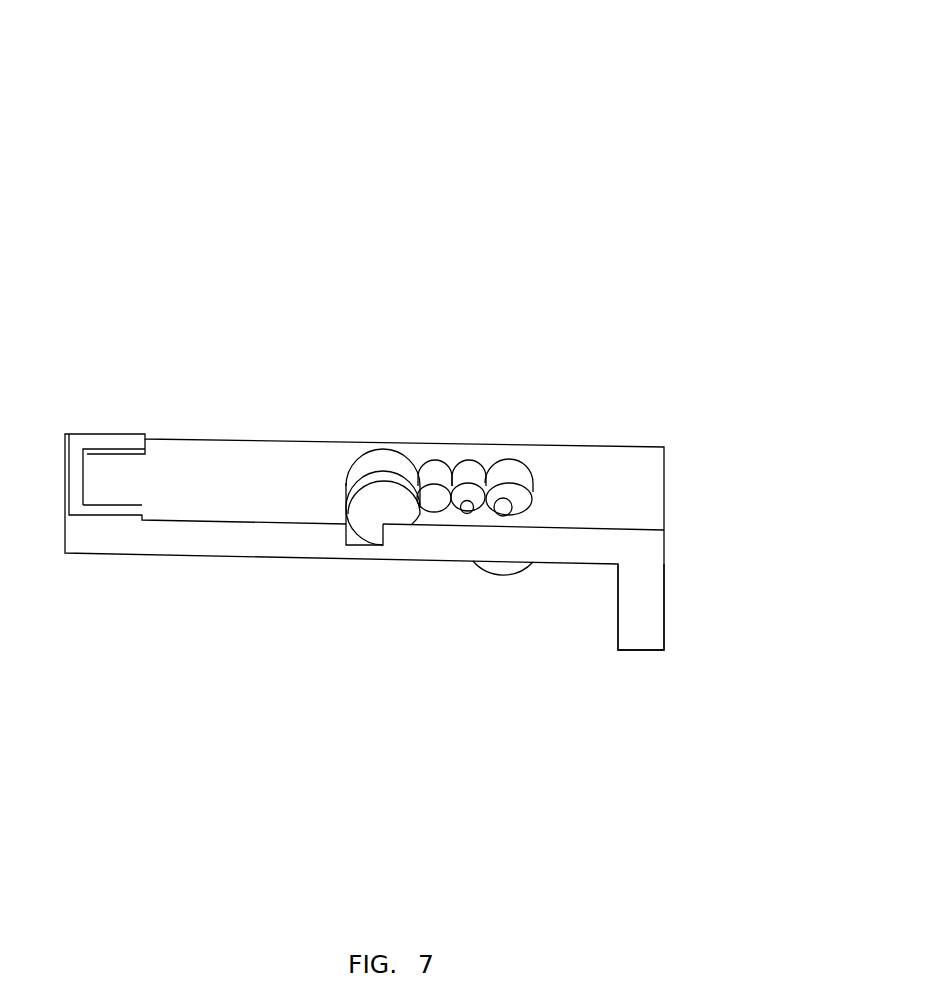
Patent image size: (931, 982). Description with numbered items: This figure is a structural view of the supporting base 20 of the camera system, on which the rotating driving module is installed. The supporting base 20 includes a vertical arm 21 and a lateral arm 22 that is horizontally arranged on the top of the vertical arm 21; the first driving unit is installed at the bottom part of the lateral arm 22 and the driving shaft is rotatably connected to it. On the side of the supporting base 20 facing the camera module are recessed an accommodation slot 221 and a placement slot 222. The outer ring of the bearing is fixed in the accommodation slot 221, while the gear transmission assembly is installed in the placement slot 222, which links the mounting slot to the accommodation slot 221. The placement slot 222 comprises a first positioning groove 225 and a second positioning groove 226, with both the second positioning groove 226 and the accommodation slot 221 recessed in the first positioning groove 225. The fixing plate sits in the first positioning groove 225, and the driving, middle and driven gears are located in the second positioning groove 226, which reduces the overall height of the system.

The supporting base 20 is at (368, 58).
The vertical arm 21 is at (657, 628).
The lateral arm 22 is at (645, 545).
The accommodation slot 221 is at (369, 513).
The placement slot 222 is at (178, 287).
The first positioning groove 225 is at (117, 472).
The second positioning groove 226 is at (510, 480).